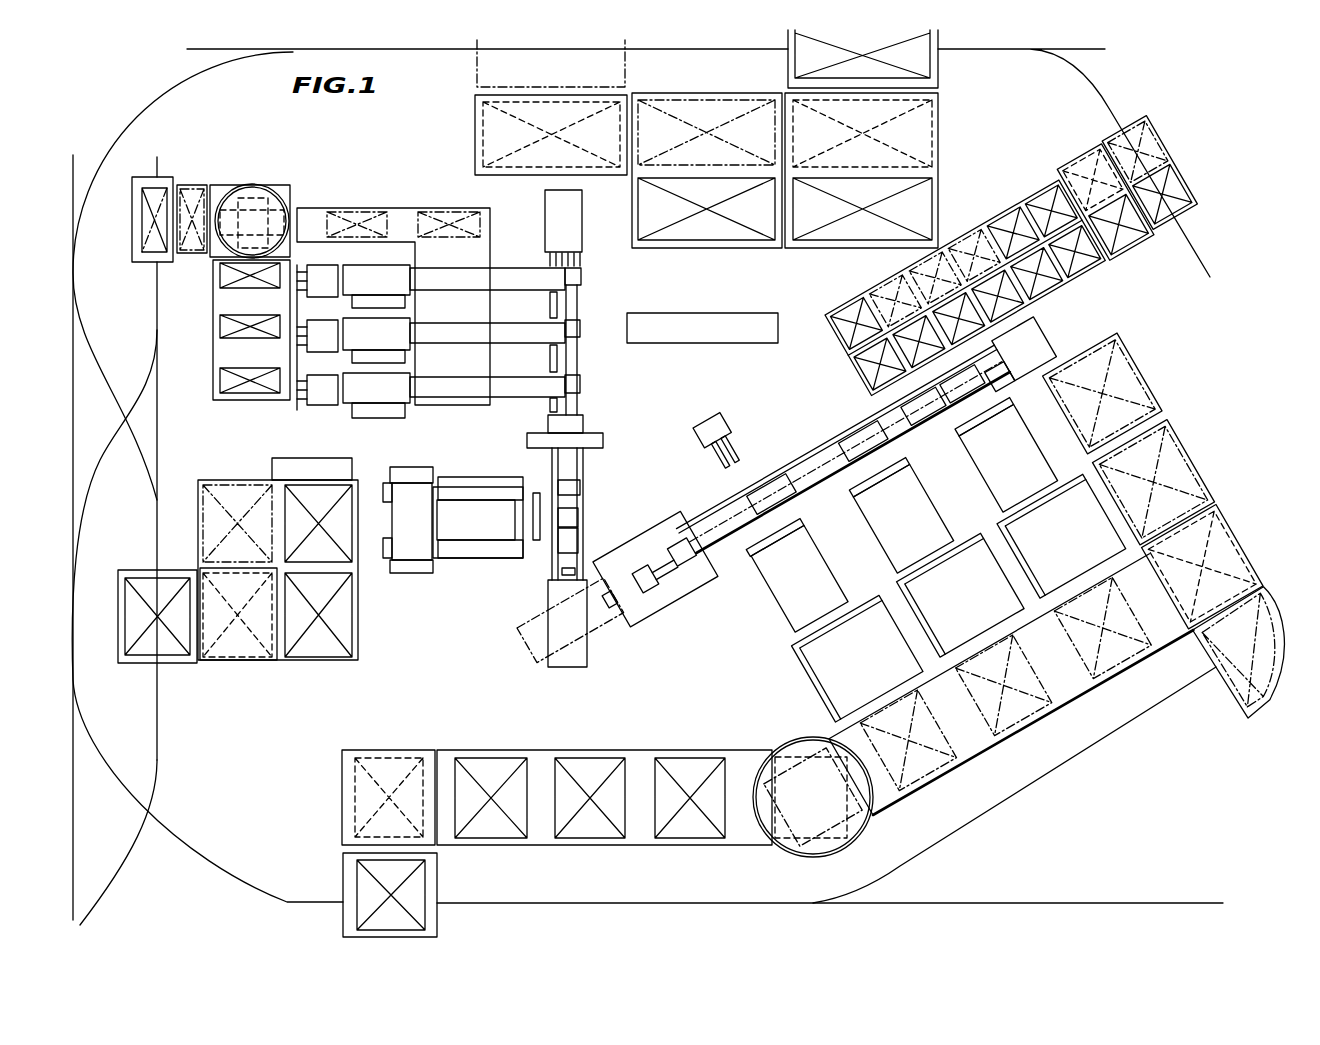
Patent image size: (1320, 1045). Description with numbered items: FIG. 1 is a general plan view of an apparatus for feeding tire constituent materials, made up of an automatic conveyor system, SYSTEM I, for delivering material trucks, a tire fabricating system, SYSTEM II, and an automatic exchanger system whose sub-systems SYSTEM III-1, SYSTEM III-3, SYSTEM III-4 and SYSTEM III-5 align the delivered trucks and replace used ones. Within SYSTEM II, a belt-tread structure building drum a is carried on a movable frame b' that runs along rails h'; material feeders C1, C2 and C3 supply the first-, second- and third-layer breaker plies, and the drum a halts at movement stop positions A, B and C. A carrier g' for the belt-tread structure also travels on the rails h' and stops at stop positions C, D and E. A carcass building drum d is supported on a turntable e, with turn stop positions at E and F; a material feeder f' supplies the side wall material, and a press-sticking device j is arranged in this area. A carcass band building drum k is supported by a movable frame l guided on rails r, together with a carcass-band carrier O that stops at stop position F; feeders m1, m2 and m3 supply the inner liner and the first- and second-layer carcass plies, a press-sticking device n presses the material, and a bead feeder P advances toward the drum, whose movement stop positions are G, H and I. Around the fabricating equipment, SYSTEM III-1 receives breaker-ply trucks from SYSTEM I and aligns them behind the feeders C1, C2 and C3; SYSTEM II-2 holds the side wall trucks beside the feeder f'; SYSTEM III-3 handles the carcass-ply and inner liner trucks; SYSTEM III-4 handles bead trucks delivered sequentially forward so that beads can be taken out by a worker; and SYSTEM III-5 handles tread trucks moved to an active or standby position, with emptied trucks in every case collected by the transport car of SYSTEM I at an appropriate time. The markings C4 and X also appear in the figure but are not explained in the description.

The belt-tread structure building drum a is at (581, 275).
The movable frame b' is at (577, 221).
The rails h' is at (590, 350).
The material feeder C1 is at (553, 288).
The material feeder C2 is at (553, 342).
The material feeder C3 is at (567, 387).
The fourth work station C4 is at (686, 313).
The movement stop position A is at (560, 268).
The movement stop position B is at (560, 338).
The movement stop position C is at (560, 392).
The stop position D is at (585, 442).
The carrier g' is at (586, 419).
The carcass building drum d is at (580, 487).
The stop position E is at (578, 512).
The turntable e is at (587, 648).
The material feeder f' is at (453, 513).
The press-sticking device j is at (537, 542).
The carcass-band carrier O is at (645, 545).
The turn stop position F is at (652, 585).
The bead feeder P is at (728, 420).
The movement stop position G is at (757, 495).
The movement stop position H is at (862, 445).
The movement stop position I is at (964, 418).
The rails r is at (918, 410).
The press-sticking device n is at (788, 516).
The material feeder m1 is at (921, 498).
The material feeder m2 is at (825, 560).
The material feeder m3 is at (1033, 446).
The carcass band building drum k is at (1002, 383).
The movable frame l is at (1038, 332).
The flow direction X is at (370, 140).
The automatic conveyor system SYSTEM I is at (655, 903).
The tire fabricating system SYSTEM II is at (793, 400).
The sub-system for side wall material trucks SYSTEM II-2 is at (280, 668).
The sub-system SYSTEM III-1 is at (300, 200).
The sub-system SYSTEM III-3 is at (745, 745).
The sub-system SYSTEM III-4 is at (1000, 210).
The sub-system SYSTEM III-5 is at (938, 127).